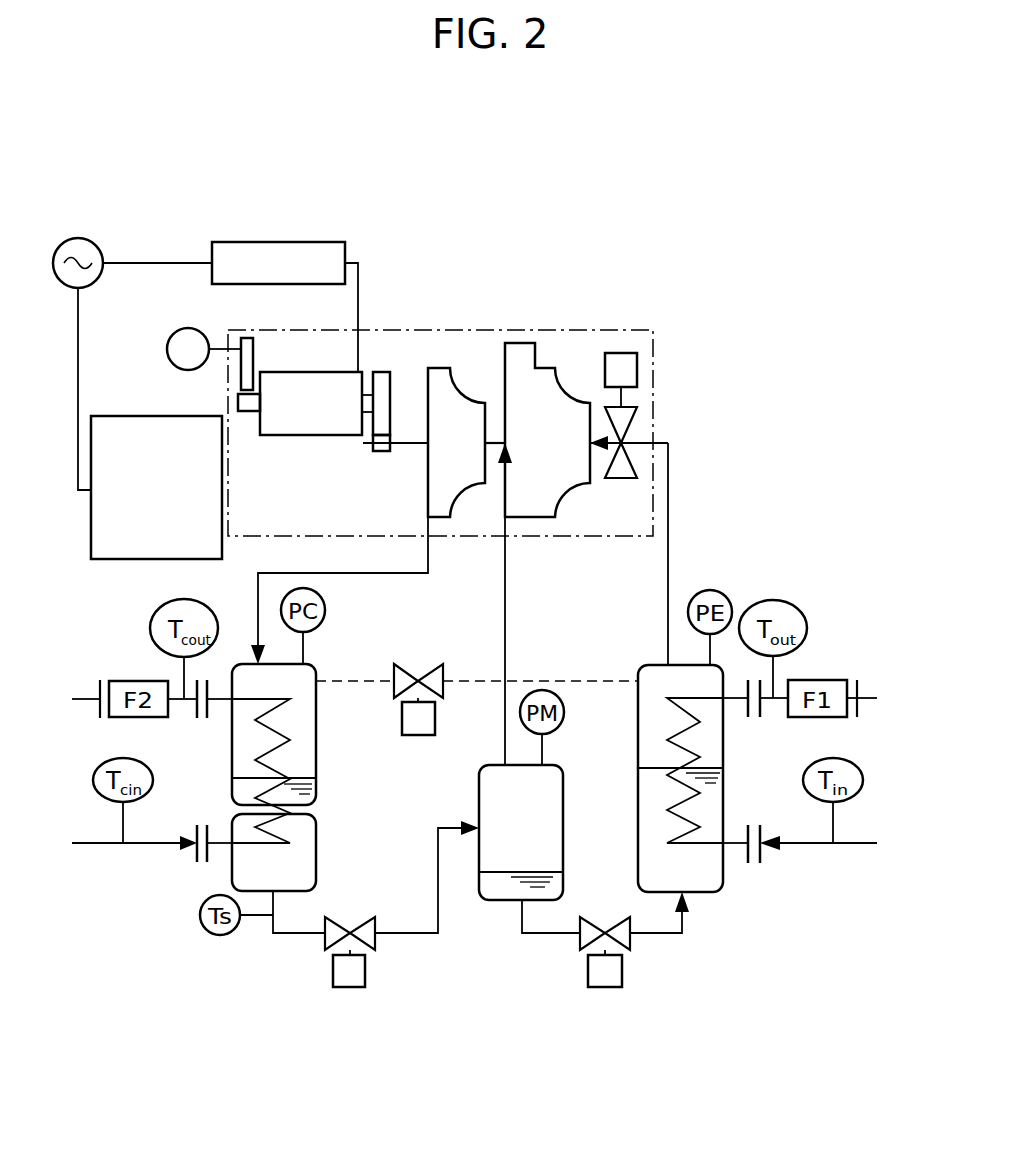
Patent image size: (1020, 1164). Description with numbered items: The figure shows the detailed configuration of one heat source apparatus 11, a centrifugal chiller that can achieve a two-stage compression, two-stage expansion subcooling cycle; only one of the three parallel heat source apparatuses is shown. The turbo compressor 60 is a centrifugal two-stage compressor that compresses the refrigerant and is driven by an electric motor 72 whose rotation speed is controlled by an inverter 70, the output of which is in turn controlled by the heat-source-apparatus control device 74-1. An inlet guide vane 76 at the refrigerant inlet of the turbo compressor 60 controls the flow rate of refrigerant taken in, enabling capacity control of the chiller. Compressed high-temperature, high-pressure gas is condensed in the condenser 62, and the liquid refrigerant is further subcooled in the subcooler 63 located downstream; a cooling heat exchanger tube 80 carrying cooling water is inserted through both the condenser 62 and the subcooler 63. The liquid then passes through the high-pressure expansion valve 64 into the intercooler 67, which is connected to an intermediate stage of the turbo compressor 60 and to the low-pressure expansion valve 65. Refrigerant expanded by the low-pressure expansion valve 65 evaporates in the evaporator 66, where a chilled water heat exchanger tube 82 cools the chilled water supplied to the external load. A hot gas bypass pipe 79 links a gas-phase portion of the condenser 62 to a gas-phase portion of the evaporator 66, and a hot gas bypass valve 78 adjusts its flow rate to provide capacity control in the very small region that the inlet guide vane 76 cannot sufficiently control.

The heat source apparatus 11 is at (172, 155).
The inverter 70 is at (275, 242).
The electric motor 72 is at (302, 372).
The turbo compressor 60 is at (453, 417).
The inlet guide vane 76 is at (626, 478).
The heat-source-apparatus control device 74-1 is at (108, 559).
The condenser 62 is at (240, 662).
The cooling heat exchanger tube 80 is at (273, 765).
The subcooler 63 is at (316, 847).
The hot gas bypass valve 78 is at (430, 665).
The hot gas bypass pipe 79 is at (560, 681).
The intercooler 67 is at (563, 820).
The high-pressure expansion valve 64 is at (375, 944).
The low-pressure expansion valve 65 is at (630, 944).
The evaporator 66 is at (648, 665).
The chilled water heat exchanger tube 82 is at (667, 739).